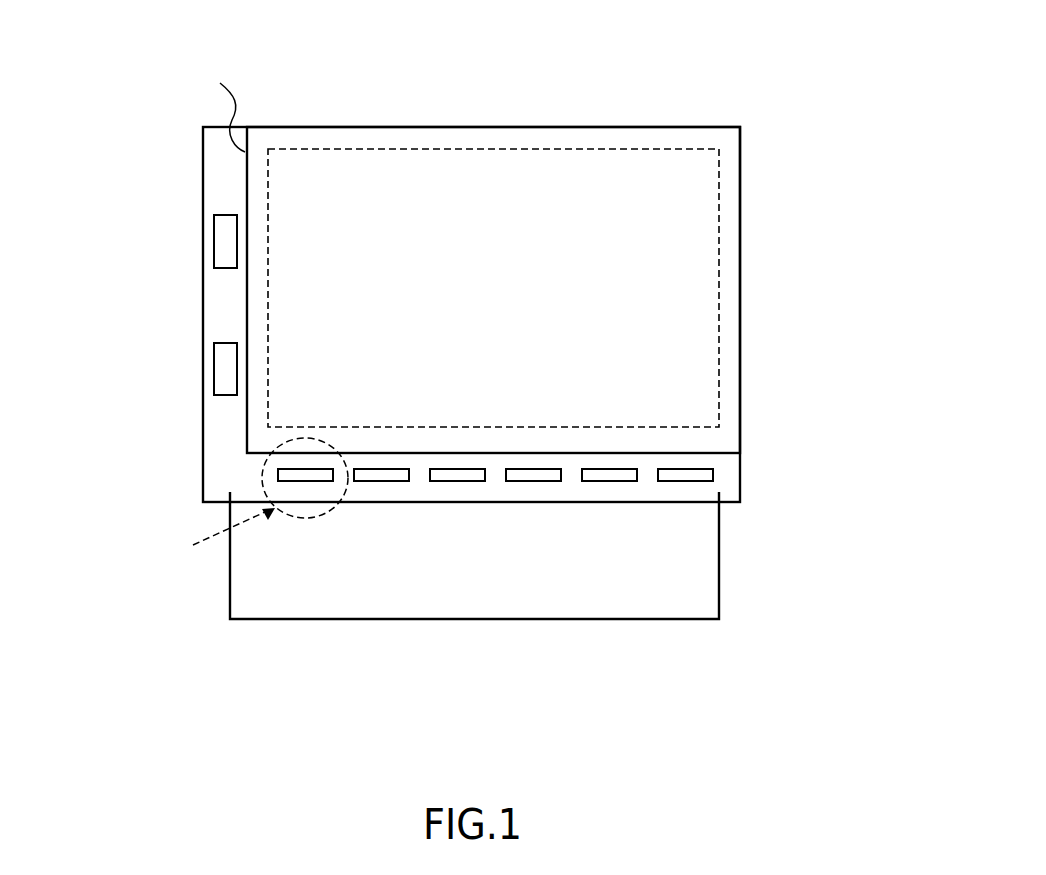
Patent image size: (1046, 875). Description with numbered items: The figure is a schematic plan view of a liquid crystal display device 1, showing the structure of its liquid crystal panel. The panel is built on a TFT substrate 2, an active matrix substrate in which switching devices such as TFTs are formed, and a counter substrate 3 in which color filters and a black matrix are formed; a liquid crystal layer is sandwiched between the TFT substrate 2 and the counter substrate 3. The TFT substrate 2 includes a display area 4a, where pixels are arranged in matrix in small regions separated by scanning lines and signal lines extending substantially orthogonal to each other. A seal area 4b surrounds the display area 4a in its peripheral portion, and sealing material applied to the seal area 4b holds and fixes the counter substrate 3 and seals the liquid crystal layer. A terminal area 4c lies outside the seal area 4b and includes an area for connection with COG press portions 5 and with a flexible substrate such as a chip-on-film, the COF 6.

The liquid crystal display device 1 is at (467, 373).
The TFT substrate 2 is at (203, 201).
The counter substrate 3 is at (367, 145).
The display area 4a is at (598, 166).
The seal area 4b is at (723, 138).
The terminal area 4c is at (730, 469).
The COG press portion 5 is at (283, 478).
The chip-on-film (COF) 6 is at (453, 608).